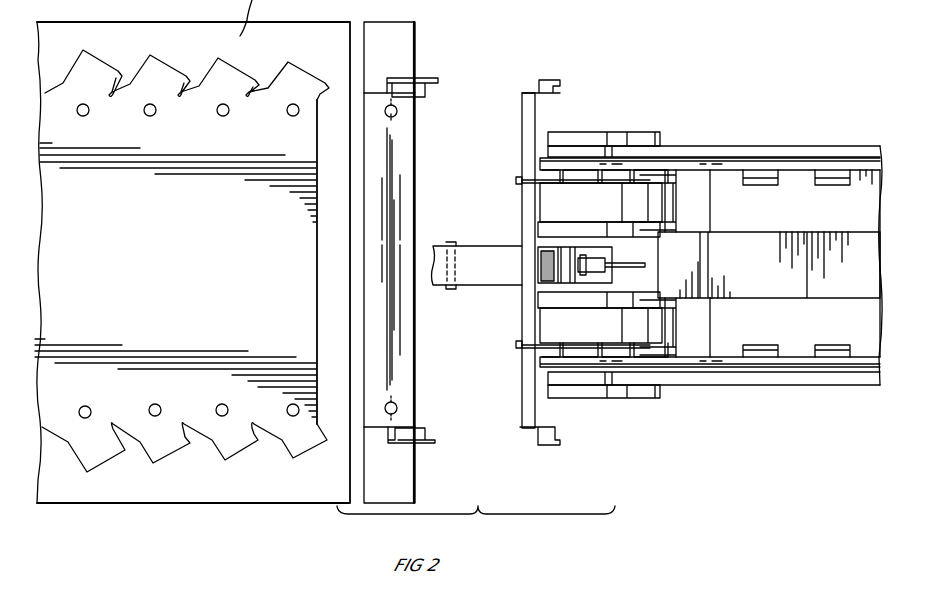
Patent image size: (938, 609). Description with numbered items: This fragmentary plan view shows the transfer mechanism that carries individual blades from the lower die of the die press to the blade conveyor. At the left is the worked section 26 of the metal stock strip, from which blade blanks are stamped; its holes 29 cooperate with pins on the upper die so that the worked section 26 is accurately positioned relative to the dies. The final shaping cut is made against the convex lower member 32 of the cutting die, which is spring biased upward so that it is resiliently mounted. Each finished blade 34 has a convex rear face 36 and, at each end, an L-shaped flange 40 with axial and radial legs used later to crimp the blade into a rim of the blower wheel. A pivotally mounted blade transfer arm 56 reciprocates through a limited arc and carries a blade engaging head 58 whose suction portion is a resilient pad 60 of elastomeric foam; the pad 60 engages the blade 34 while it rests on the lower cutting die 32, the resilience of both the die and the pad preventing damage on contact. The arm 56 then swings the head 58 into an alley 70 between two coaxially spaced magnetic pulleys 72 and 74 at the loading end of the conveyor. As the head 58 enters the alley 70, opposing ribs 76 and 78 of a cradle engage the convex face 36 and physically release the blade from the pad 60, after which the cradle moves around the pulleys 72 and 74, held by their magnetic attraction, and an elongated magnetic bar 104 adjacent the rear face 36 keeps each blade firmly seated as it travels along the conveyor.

The worked section 26 is at (192, 262).
The holes 29 is at (228, 114).
The convex lower member 32 is at (405, 47).
The blade 34 is at (418, 150).
The convex rear face 36 is at (408, 368).
The L-shaped flange 40 is at (411, 92).
The blade transfer arm 56 is at (465, 283).
The blade engaging head 58 is at (605, 273).
The resilient pad 60 is at (540, 258).
The alley 70 is at (630, 251).
The magnetic pulley 72 is at (603, 184).
The magnetic pulley 74 is at (603, 345).
The rib 76 is at (516, 348).
The rib 78 is at (516, 180).
The magnetic bar 104 is at (761, 265).